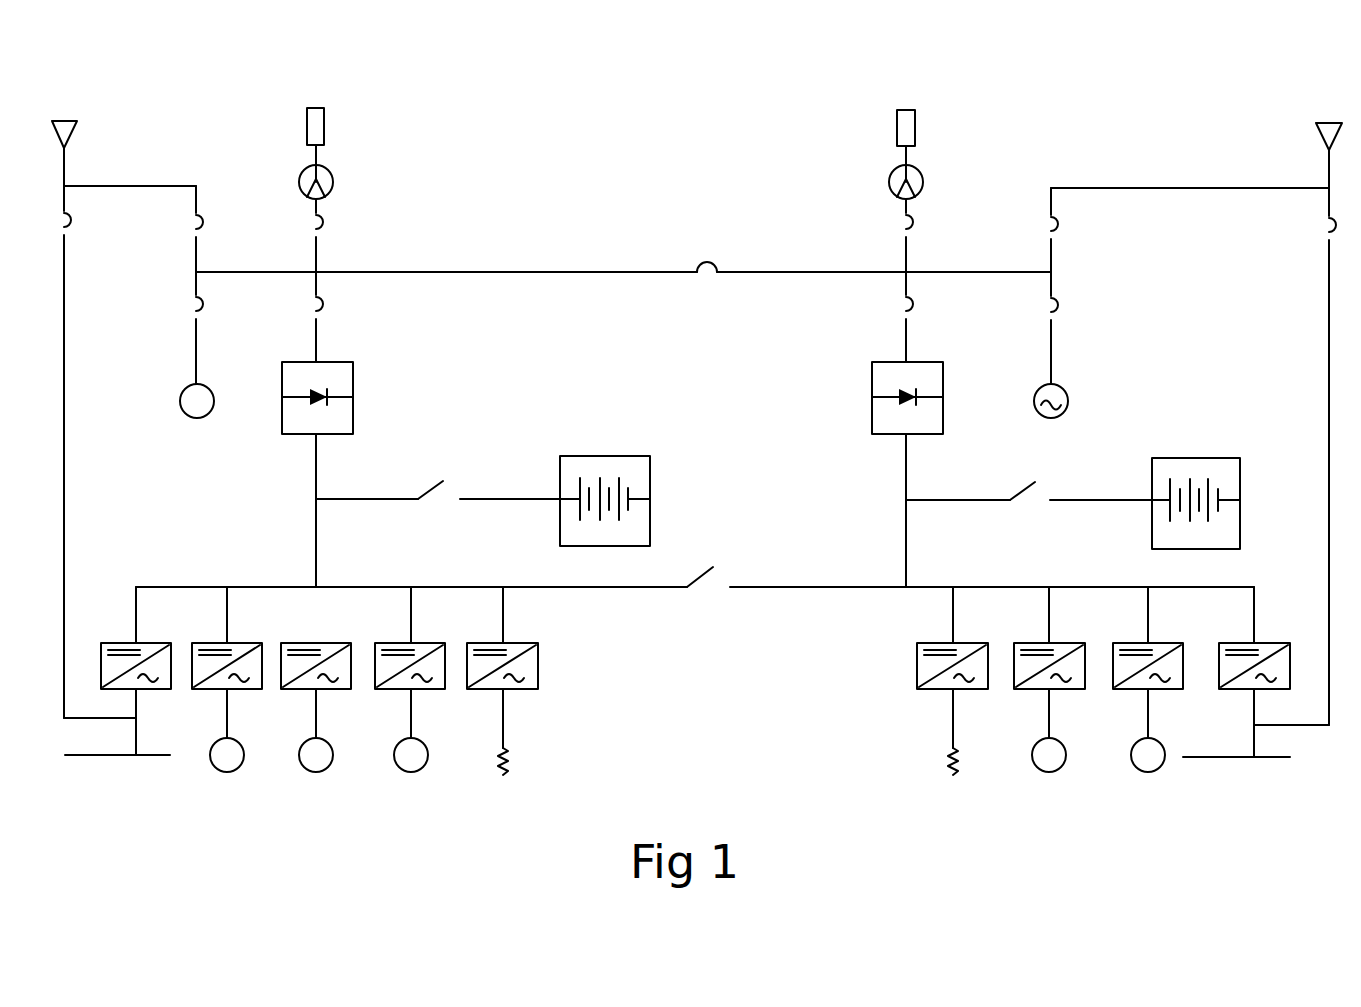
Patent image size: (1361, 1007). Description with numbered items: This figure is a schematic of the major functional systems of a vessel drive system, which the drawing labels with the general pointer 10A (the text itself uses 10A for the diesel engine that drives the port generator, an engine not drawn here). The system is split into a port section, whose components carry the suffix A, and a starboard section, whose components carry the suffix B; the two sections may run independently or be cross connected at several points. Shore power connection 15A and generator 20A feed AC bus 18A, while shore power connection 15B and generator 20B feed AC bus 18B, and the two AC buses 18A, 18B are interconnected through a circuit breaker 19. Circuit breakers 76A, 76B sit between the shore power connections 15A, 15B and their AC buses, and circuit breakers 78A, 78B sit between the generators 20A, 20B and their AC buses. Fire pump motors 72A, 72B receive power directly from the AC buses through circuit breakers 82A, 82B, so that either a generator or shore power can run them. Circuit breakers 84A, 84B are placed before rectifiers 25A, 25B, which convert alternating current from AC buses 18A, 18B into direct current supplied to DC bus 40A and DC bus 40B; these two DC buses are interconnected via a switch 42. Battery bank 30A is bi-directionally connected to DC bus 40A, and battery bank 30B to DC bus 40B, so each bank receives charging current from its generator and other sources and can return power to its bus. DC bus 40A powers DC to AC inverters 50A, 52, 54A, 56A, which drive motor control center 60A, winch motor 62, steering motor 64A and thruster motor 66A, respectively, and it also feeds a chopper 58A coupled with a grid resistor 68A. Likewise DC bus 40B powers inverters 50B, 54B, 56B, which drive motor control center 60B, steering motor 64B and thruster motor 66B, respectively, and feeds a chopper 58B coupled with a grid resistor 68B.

The diesel engine 10A is at (600, 160).
The shore power connection 15A is at (77, 121).
The shore power connection 15B is at (1322, 123).
The AC bus 18A is at (457, 274).
The AC bus 18B is at (818, 275).
The circuit breaker 19 is at (705, 262).
The generator 20A is at (330, 172).
The generator 20B is at (921, 172).
The rectifier 25A is at (292, 435).
The rectifier 25B is at (882, 435).
The battery bank 30A is at (598, 456).
The battery bank 30B is at (1197, 458).
The DC bus 40A is at (258, 585).
The DC bus 40B is at (983, 585).
The switch 42 is at (705, 575).
The inverter 50A is at (110, 643).
The inverter 50B is at (1235, 643).
The inverter 52 is at (208, 643).
The inverter 54A is at (293, 643).
The inverter 54B is at (1132, 643).
The inverter 56A is at (387, 643).
The inverter 56B is at (1035, 643).
The chopper 58A is at (482, 643).
The chopper 58B is at (933, 643).
The motor control center 60A is at (114, 757).
The motor control center 60B is at (1233, 759).
The winch motor 62 is at (227, 772).
The steering motor 64A is at (316, 772).
The steering motor 64B is at (1148, 772).
The thruster motor 66A is at (411, 772).
The thruster motor 66B is at (1049, 772).
The grid resistor 68A is at (509, 762).
The grid resistor 68B is at (947, 765).
The fire pump motor 72A is at (188, 417).
The fire pump motor 72B is at (1047, 419).
The circuit breaker 76A is at (204, 228).
The circuit breaker 76B is at (1059, 229).
The circuit breaker 78A is at (324, 228).
The circuit breaker 78B is at (914, 228).
The circuit breaker 82A is at (204, 310).
The circuit breaker 82B is at (1059, 310).
The circuit breaker 84A is at (324, 310).
The circuit breaker 84B is at (914, 310).